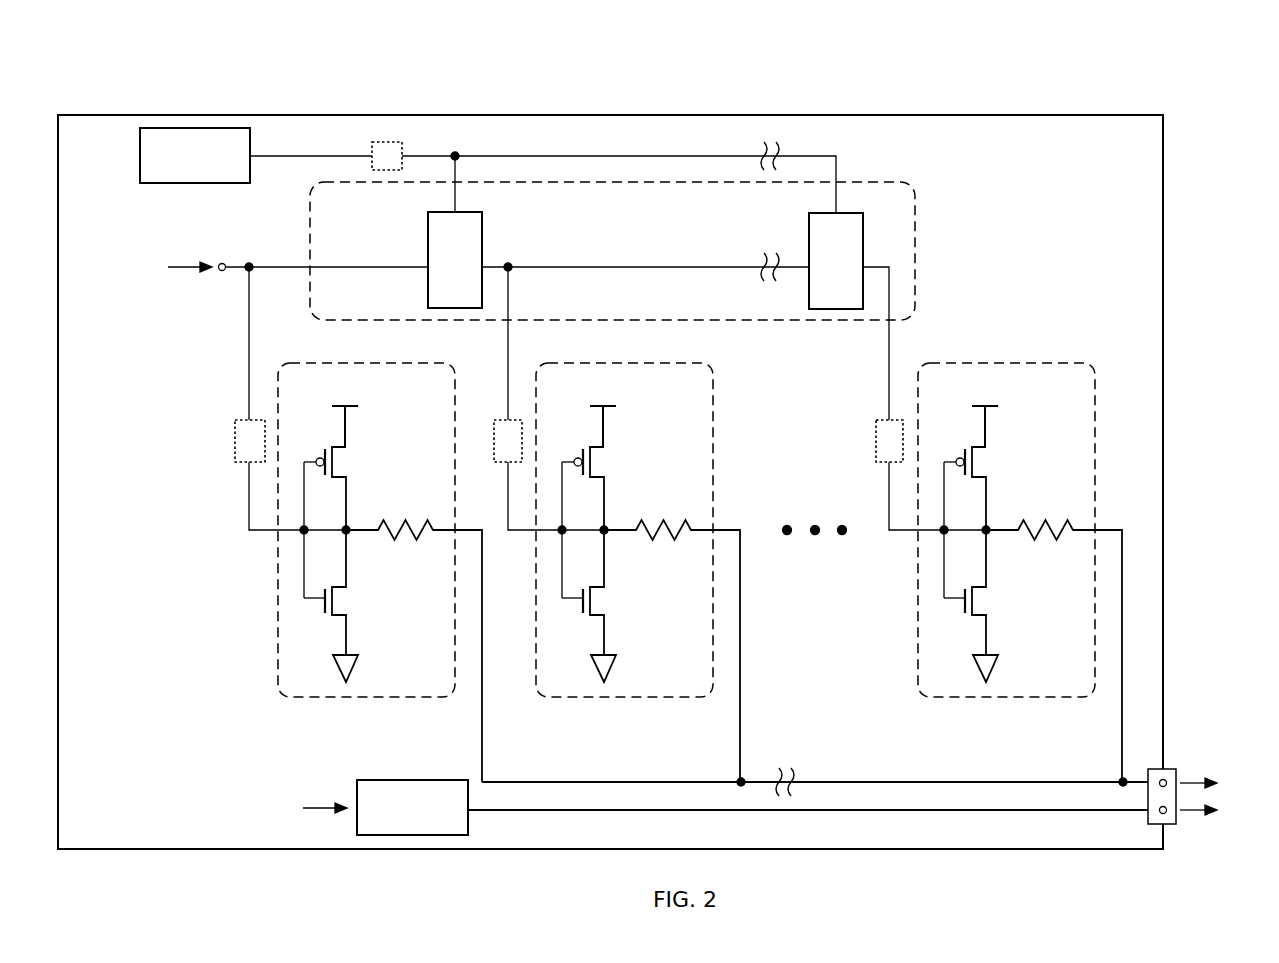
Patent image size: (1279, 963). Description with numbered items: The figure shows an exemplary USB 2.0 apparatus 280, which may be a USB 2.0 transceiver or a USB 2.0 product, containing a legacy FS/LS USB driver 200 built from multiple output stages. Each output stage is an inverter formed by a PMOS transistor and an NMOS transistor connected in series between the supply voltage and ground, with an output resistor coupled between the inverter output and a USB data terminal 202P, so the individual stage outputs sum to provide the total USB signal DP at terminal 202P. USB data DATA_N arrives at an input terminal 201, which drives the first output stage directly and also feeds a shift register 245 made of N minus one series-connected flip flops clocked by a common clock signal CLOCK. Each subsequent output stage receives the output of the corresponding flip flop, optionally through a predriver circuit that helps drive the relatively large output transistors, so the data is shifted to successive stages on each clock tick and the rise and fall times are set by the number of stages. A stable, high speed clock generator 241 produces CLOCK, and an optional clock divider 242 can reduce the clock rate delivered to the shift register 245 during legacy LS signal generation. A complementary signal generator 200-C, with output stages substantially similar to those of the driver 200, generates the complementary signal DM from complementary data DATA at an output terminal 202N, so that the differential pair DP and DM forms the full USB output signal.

The USB 2.0 apparatus 280 is at (307, 115).
The clock generator 241 is at (256, 154).
The clock divider 242 is at (387, 140).
The input terminal 201 is at (222, 257).
The shift register 245 is at (915, 262).
The legacy FS/LS USB driver 200 is at (230, 760).
The complementary signal generator 200-C is at (690, 807).
The USB data terminal 202P is at (1168, 769).
The output terminal 202N is at (1167, 824).